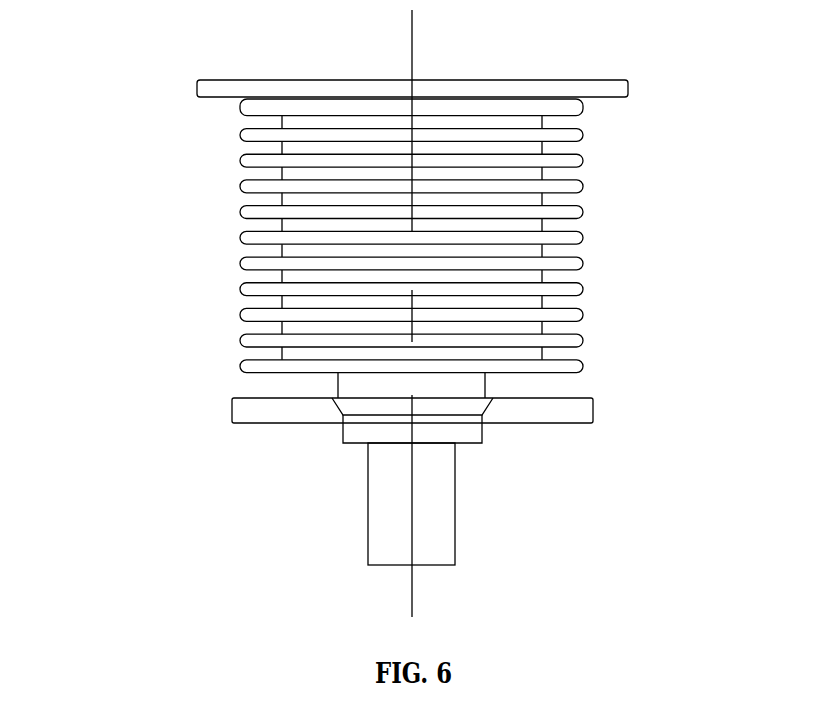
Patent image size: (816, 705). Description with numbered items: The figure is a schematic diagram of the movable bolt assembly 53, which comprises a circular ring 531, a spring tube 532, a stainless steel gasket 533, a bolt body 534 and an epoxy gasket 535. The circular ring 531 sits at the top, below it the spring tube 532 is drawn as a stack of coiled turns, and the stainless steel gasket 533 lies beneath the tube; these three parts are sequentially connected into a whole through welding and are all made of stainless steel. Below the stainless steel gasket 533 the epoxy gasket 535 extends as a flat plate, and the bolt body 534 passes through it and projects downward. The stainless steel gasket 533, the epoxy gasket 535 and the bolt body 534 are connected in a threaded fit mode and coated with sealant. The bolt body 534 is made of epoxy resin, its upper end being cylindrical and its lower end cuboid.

The movable bolt assembly 53 is at (409, 313).
The circular ring 531 is at (197, 97).
The spring tube 532 is at (243, 200).
The stainless steel gasket 533 is at (340, 384).
The bolt body 534 is at (410, 415).
The epoxy gasket 535 is at (233, 421).